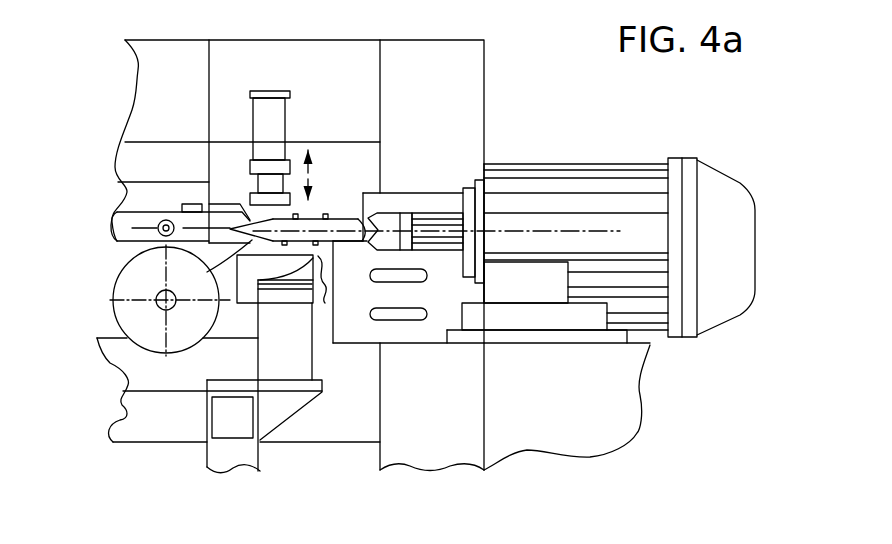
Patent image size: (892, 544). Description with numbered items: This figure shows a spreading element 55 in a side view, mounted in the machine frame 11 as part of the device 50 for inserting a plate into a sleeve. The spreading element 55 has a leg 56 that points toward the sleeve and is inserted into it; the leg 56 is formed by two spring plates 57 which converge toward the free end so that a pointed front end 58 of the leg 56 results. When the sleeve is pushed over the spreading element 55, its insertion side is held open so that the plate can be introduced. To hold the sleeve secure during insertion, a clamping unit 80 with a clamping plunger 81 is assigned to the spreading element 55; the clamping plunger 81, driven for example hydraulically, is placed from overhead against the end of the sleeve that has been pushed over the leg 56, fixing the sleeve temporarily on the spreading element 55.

The machine frame 11 is at (457, 92).
The device for inserting the plate 50 is at (620, 368).
The spreading element 55 is at (315, 218).
The leg 56 is at (228, 243).
The spring plate 57 is at (245, 208).
The pointed front end 58 is at (233, 230).
The clamping unit 80 is at (243, 122).
The clamping plunger 81 is at (262, 198).